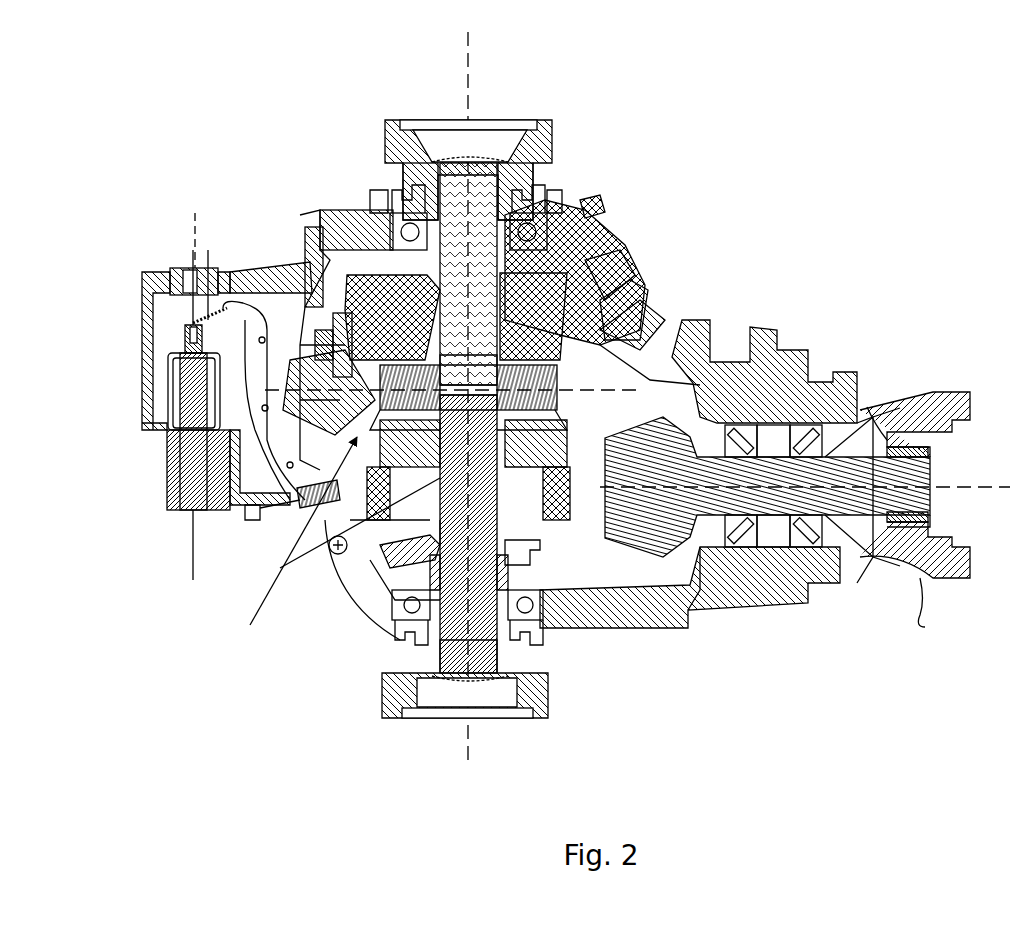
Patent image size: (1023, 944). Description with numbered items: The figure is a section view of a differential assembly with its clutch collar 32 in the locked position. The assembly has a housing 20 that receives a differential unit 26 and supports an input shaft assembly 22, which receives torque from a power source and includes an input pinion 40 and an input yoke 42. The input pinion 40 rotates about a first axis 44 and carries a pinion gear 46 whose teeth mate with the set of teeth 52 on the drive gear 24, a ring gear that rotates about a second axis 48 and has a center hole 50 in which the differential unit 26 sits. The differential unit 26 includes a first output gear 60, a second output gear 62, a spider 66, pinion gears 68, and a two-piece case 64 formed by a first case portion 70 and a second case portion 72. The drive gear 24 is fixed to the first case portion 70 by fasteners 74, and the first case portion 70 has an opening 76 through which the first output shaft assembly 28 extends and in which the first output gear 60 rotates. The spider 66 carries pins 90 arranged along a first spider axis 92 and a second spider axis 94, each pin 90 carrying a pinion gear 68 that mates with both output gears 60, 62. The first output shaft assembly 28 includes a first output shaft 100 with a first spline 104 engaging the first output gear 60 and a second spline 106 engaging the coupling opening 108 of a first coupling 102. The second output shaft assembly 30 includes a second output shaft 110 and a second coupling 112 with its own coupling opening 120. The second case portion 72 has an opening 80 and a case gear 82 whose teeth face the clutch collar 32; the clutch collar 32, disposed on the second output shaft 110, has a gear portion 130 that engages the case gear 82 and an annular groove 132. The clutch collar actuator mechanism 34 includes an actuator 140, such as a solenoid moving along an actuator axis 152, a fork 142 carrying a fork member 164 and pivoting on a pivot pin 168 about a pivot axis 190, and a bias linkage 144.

The housing 20 is at (830, 608).
The input shaft assembly 22 is at (872, 413).
The drive gear 24 is at (700, 330).
The differential unit 26 is at (612, 258).
The case 64 is at (392, 317).
The first output shaft assembly 28 is at (548, 116).
The second output shaft assembly 30 is at (538, 728).
The clutch collar 32 is at (620, 632).
The clutch collar actuator mechanism 34 is at (168, 300).
The input pinion 40 is at (938, 465).
The input yoke 42 is at (930, 590).
The first axis 44 is at (975, 497).
The pinion gear 46 is at (718, 612).
The second axis 48 is at (482, 48).
The center hole 50 is at (330, 525).
The set of teeth 52 is at (246, 512).
The first output gear 60 is at (615, 232).
The second output gear 62 is at (385, 603).
The spider 66 is at (606, 280).
The pinion gears 68 is at (372, 250).
The first case portion 70 is at (300, 308).
The second case portion 72 is at (362, 540).
The fasteners 74 is at (318, 258).
The opening 76 is at (592, 206).
The opening 80 is at (640, 332).
The case gear 82 is at (402, 628).
The pins 90 is at (346, 260).
The first spider axis 92 is at (288, 372).
The second spider axis 94 is at (455, 168).
The first output shaft 100 is at (520, 165).
The first coupling 102 is at (400, 150).
The first spline 104 is at (566, 225).
The second spline 106 is at (552, 210).
The coupling opening 108 is at (506, 126).
The second output shaft 110 is at (550, 686).
The second coupling 112 is at (537, 718).
The coupling opening 120 is at (483, 690).
The gear portion 130 is at (690, 620).
The annular groove 132 is at (530, 556).
The actuator 140 is at (165, 480).
The fork 142 is at (232, 340).
The bias linkage 144 is at (206, 275).
The actuator axis 152 is at (192, 237).
The fork member 164 is at (432, 642).
The pivot pin 168 is at (382, 590).
The pivot axis 190 is at (372, 560).